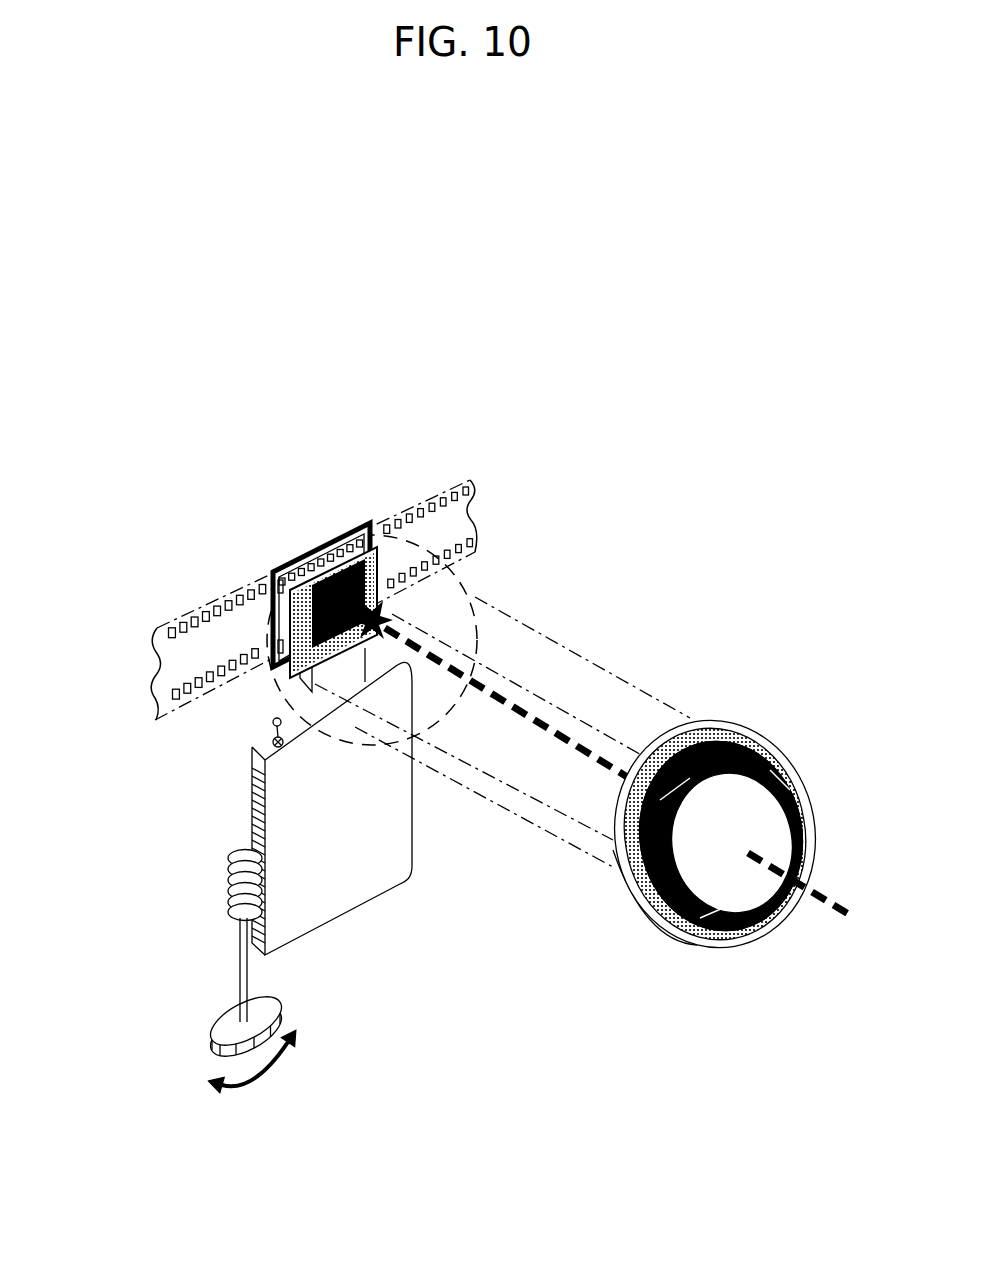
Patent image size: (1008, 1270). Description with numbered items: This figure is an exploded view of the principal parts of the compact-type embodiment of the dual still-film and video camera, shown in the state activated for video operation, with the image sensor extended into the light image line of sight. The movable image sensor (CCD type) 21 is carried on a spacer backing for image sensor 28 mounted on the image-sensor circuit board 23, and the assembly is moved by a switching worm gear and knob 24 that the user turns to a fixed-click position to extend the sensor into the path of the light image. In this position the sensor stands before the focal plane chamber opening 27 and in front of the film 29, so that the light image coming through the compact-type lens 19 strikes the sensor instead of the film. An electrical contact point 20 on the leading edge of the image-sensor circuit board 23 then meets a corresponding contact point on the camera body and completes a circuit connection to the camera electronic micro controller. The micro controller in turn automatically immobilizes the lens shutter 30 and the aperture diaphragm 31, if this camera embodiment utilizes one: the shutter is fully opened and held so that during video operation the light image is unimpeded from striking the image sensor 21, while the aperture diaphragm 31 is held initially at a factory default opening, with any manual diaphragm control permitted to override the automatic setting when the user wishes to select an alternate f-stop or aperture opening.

The compact-type lens 19 is at (712, 819).
The electrical contact points 20 is at (268, 744).
The image sensor (CCD type) 21 is at (380, 592).
The image-sensor circuit board 23 is at (368, 906).
The switching worm gear and knob 24 is at (218, 988).
The focal plane chamber opening 27 is at (310, 555).
The spacer backing for image sensor 28 is at (377, 547).
The film 29 is at (180, 673).
The lens shutter 30 is at (758, 903).
The aperture diaphragm 31 is at (625, 843).